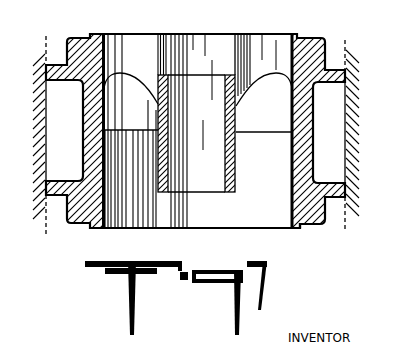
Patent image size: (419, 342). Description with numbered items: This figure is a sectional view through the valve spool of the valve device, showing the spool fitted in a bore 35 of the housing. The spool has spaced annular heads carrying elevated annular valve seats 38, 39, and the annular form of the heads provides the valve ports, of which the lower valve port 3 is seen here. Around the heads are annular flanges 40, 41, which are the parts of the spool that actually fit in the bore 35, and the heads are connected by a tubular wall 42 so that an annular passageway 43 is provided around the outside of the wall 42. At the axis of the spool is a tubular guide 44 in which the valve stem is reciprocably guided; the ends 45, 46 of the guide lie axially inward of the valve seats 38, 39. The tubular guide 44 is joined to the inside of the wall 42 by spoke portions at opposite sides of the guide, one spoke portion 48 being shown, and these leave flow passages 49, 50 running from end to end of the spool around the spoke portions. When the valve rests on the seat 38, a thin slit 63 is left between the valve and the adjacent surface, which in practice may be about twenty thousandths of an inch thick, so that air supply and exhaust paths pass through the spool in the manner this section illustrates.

The lower valve port 3 is at (262, 217).
The bore 35 is at (45, 135).
The annular valve seat 38 is at (300, 37).
The annular valve seat 39 is at (298, 223).
The annular flange 40 is at (47, 80).
The annular flange 41 is at (44, 188).
The tubular wall 42 is at (87, 152).
The annular passageway 43 is at (55, 97).
The tubular guide 44 is at (165, 193).
The end of the guide 45 is at (231, 77).
The end of the guide 46 is at (233, 194).
The spoke portion 48 is at (248, 43).
The flow passage 49 is at (270, 47).
The flow passage 50 is at (140, 45).
The thin slit 63 is at (177, 34).